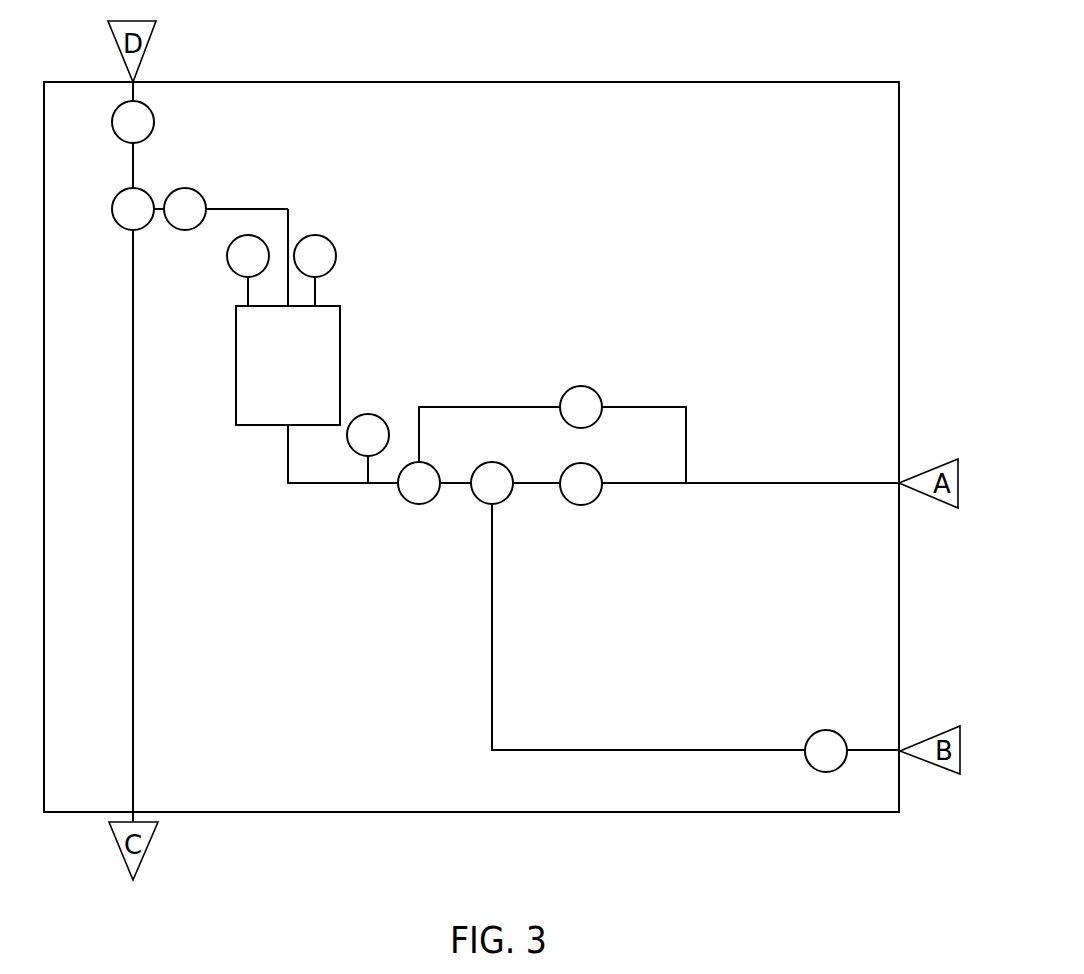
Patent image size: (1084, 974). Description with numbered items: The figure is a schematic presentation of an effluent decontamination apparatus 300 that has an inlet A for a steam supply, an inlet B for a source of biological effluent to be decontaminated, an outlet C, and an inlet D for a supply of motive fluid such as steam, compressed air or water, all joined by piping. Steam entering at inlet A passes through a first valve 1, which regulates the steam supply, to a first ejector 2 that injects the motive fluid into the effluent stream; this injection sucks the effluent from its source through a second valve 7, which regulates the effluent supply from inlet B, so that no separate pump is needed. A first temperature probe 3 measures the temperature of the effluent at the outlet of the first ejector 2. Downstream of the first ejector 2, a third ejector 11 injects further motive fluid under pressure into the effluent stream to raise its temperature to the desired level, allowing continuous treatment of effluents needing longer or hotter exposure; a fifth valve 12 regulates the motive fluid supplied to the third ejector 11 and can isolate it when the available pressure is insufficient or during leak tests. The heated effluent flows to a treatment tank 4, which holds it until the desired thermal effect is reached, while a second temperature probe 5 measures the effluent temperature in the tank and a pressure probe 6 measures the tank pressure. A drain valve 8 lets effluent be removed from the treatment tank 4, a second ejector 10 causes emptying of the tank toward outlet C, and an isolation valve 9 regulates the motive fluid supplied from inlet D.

The effluent decontamination apparatus 300 is at (868, 65).
The first valve 1 is at (581, 484).
The first ejector 2 is at (492, 483).
The first temperature probe 3 is at (368, 435).
The treatment tank 4 is at (288, 365).
The second temperature probe 5 is at (248, 256).
The pressure probe 6 is at (315, 256).
The second valve 7 is at (826, 751).
The drain valve 8 is at (185, 209).
The isolation valve 9 is at (133, 122).
The second ejector 10 is at (133, 209).
The third ejector 11 is at (419, 483).
The fifth valve 12 is at (581, 407).